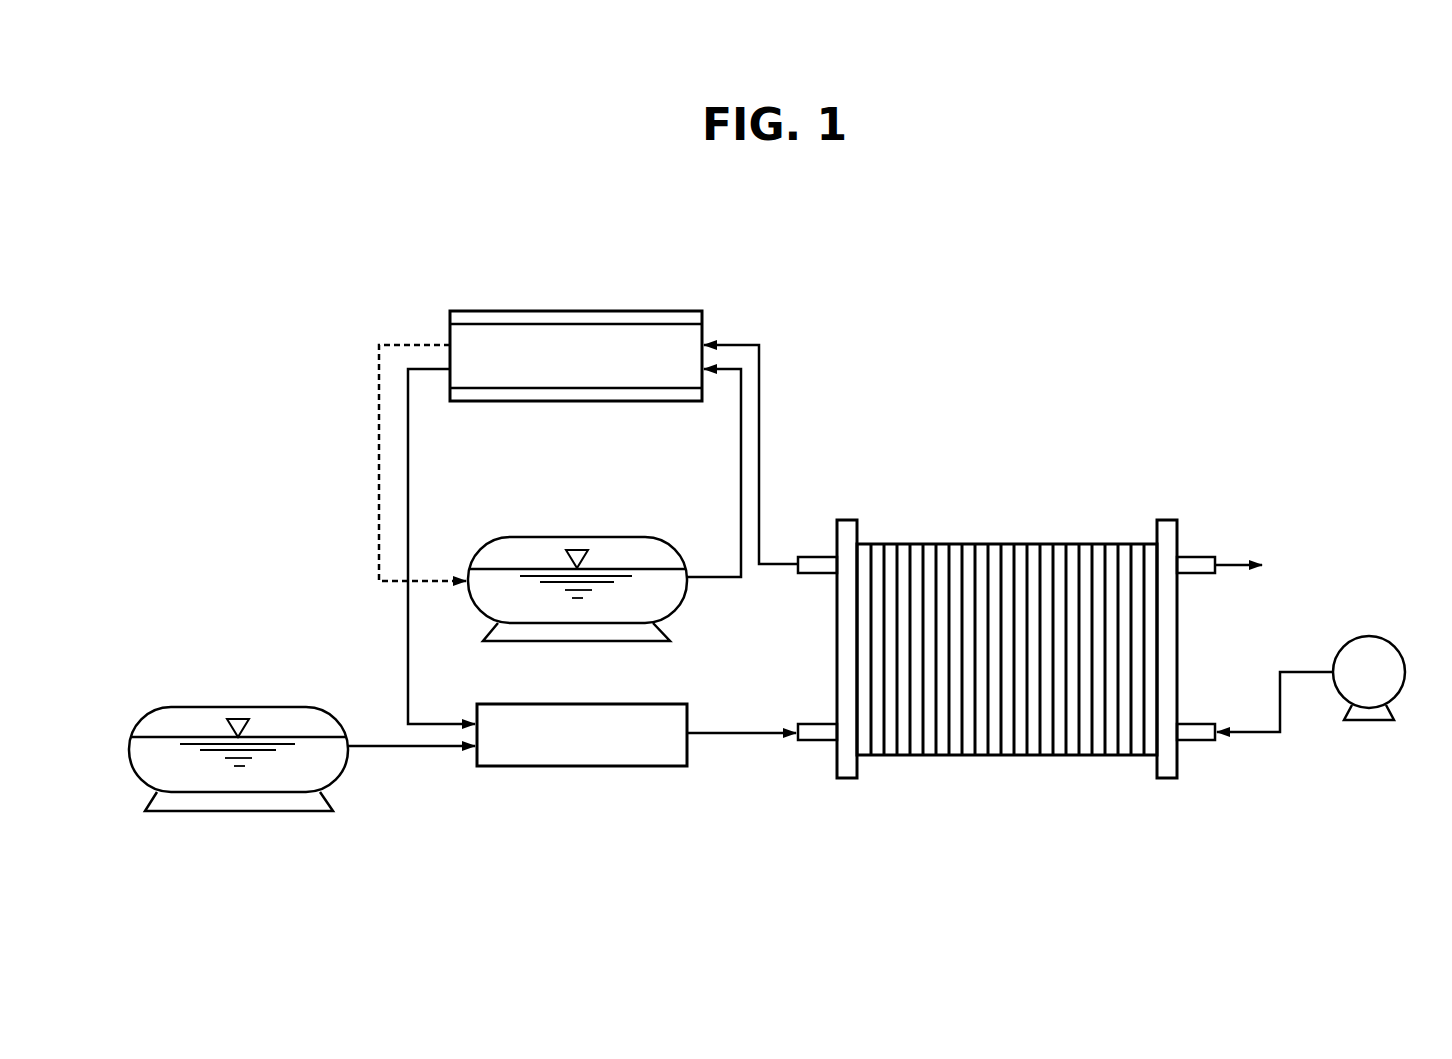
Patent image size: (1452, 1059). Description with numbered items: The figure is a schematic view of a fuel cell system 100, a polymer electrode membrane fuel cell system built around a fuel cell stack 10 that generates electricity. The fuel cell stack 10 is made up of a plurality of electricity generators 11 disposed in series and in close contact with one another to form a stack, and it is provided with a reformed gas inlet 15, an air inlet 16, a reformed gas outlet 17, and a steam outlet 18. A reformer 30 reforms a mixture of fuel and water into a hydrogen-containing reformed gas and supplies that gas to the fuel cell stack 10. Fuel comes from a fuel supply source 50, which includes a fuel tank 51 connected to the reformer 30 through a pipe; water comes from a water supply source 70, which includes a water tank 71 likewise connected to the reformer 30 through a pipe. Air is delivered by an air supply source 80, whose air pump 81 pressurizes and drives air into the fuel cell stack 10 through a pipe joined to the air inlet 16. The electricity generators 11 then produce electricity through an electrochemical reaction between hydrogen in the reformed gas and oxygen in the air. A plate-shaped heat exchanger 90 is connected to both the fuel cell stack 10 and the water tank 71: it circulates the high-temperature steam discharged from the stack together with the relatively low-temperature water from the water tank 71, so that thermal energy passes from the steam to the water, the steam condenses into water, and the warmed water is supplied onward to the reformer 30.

The fuel cell system 100 is at (788, 251).
The fuel cell stack 10 is at (1015, 646).
The electricity generators 11 is at (1008, 547).
The reformed gas inlet 15 is at (815, 736).
The air inlet 16 is at (1193, 736).
The reformed gas outlet 17 is at (1193, 560).
The steam outlet 18 is at (812, 560).
The reformer 30 is at (650, 704).
The fuel supply source 50 is at (220, 720).
The fuel tank 51 is at (275, 707).
The water supply source 70 is at (559, 551).
The water tank 71 is at (612, 537).
The air supply source 80 is at (1385, 642).
The air pump 81 is at (1360, 640).
The heat exchanger 90 is at (455, 311).